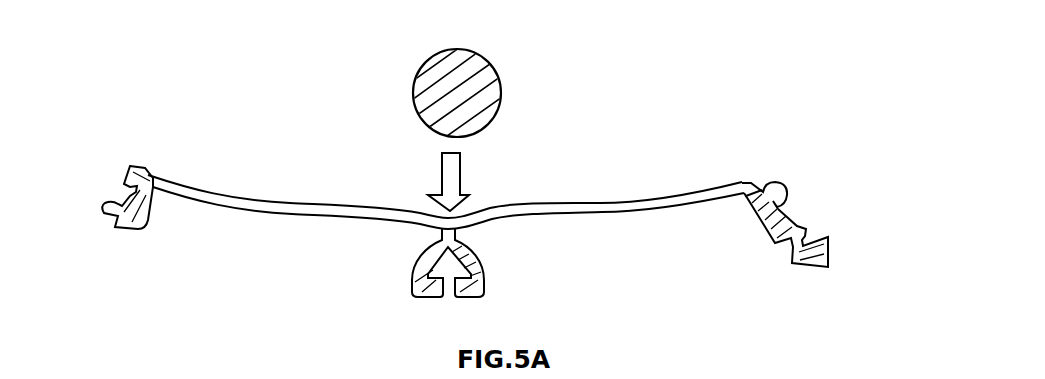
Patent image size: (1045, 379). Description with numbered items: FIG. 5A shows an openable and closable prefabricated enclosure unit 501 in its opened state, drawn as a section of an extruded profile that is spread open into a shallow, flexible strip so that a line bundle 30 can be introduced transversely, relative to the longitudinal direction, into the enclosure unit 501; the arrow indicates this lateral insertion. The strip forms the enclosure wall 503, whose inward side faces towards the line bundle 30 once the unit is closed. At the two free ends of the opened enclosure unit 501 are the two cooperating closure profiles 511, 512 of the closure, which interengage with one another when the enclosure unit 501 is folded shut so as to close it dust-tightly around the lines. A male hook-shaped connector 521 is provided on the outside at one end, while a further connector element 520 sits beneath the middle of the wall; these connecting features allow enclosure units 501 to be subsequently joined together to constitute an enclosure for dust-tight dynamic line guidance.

The line bundle 30 is at (477, 85).
The enclosure unit 501 is at (308, 226).
The enclosure wall 503 is at (597, 205).
The closure profile 511 is at (776, 183).
The closure profile 512 is at (102, 214).
The central clip 520 is at (477, 278).
The male hook-shaped connector 521 is at (836, 247).